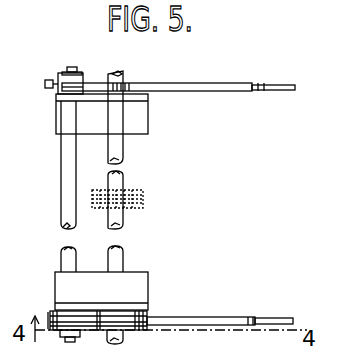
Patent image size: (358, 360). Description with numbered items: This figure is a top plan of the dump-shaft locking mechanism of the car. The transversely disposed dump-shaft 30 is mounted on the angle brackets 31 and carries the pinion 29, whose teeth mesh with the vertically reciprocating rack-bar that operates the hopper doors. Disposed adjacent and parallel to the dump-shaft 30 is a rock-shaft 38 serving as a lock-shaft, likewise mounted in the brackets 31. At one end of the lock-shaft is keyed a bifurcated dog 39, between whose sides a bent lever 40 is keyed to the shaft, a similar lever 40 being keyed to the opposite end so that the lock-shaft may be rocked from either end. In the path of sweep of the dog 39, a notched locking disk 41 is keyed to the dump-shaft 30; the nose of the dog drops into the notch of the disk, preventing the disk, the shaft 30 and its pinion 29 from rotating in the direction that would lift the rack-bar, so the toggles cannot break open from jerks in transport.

The pinion 29 is at (143, 199).
The dump-shaft 30 is at (120, 172).
The angle brackets 31 is at (148, 114).
The rock-shaft 38 is at (61, 158).
The bifurcated dog 39 is at (50, 326).
The bent lever 40 is at (232, 83).
The notched locking disk 41 is at (128, 323).